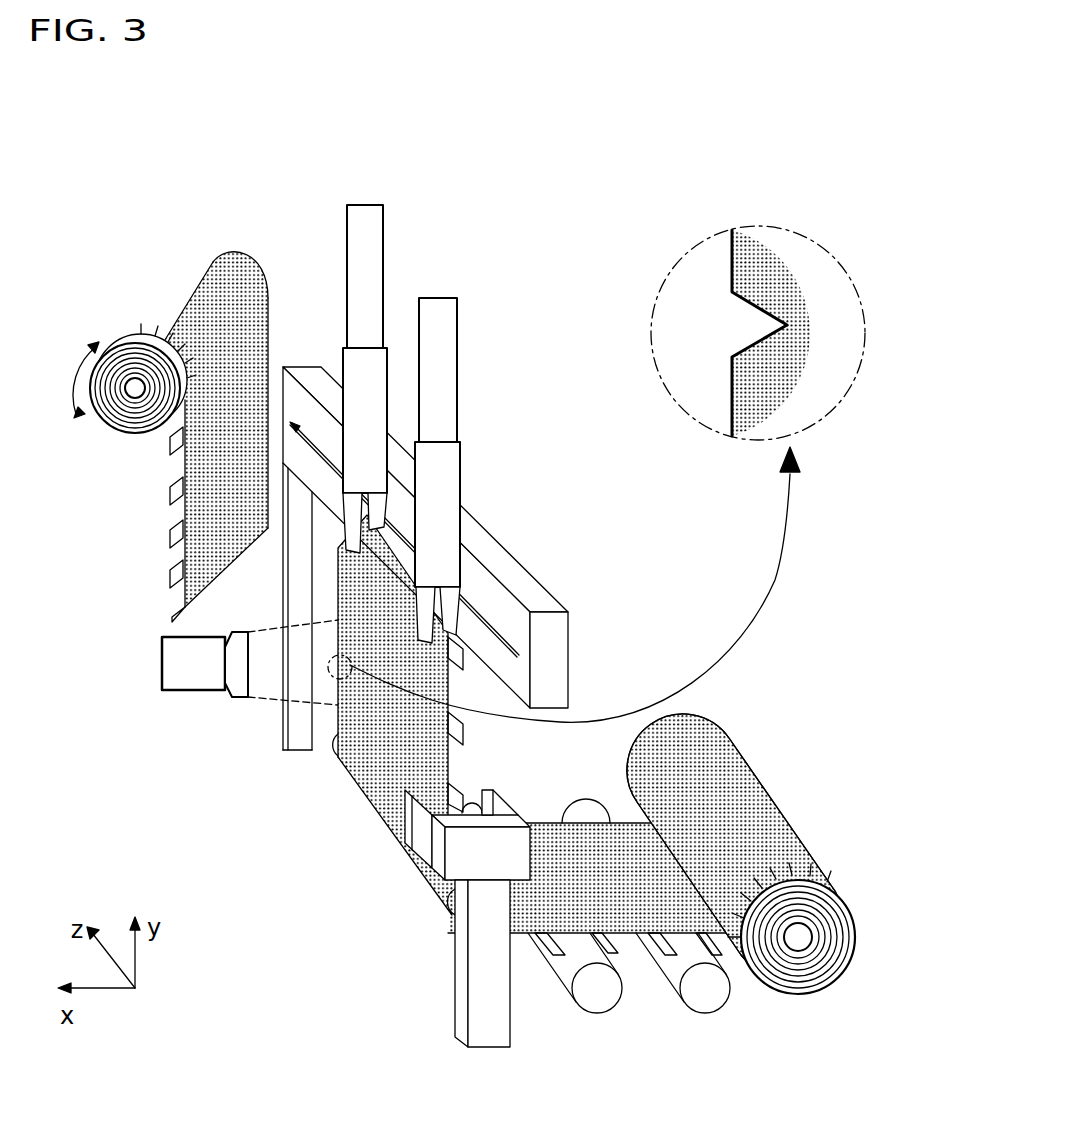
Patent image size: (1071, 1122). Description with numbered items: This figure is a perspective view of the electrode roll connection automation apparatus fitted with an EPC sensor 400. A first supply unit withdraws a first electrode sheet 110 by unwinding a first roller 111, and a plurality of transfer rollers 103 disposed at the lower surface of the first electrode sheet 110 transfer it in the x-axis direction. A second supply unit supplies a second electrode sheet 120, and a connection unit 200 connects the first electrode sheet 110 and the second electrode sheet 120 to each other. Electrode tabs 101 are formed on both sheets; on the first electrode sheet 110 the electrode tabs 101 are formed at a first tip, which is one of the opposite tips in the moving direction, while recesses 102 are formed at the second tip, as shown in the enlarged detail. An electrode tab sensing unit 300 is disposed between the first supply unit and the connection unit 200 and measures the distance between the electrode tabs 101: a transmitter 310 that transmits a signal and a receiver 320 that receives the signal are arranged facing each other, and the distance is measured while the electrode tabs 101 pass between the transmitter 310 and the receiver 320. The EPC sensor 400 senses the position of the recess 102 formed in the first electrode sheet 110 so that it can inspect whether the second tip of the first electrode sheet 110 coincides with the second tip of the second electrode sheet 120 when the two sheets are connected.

The electrode tabs 101 is at (172, 488).
The recesses 102 is at (726, 322).
The transfer rollers 103 is at (712, 1003).
The first electrode sheet 110 is at (775, 835).
The first roller 111 is at (803, 938).
The second electrode sheet 120 is at (163, 293).
The connection unit 200 is at (562, 550).
The electrode tab sensing unit 300 is at (438, 1003).
The transmitter 310 is at (412, 830).
The receiver 320 is at (497, 790).
The EPC sensor 400 is at (162, 663).